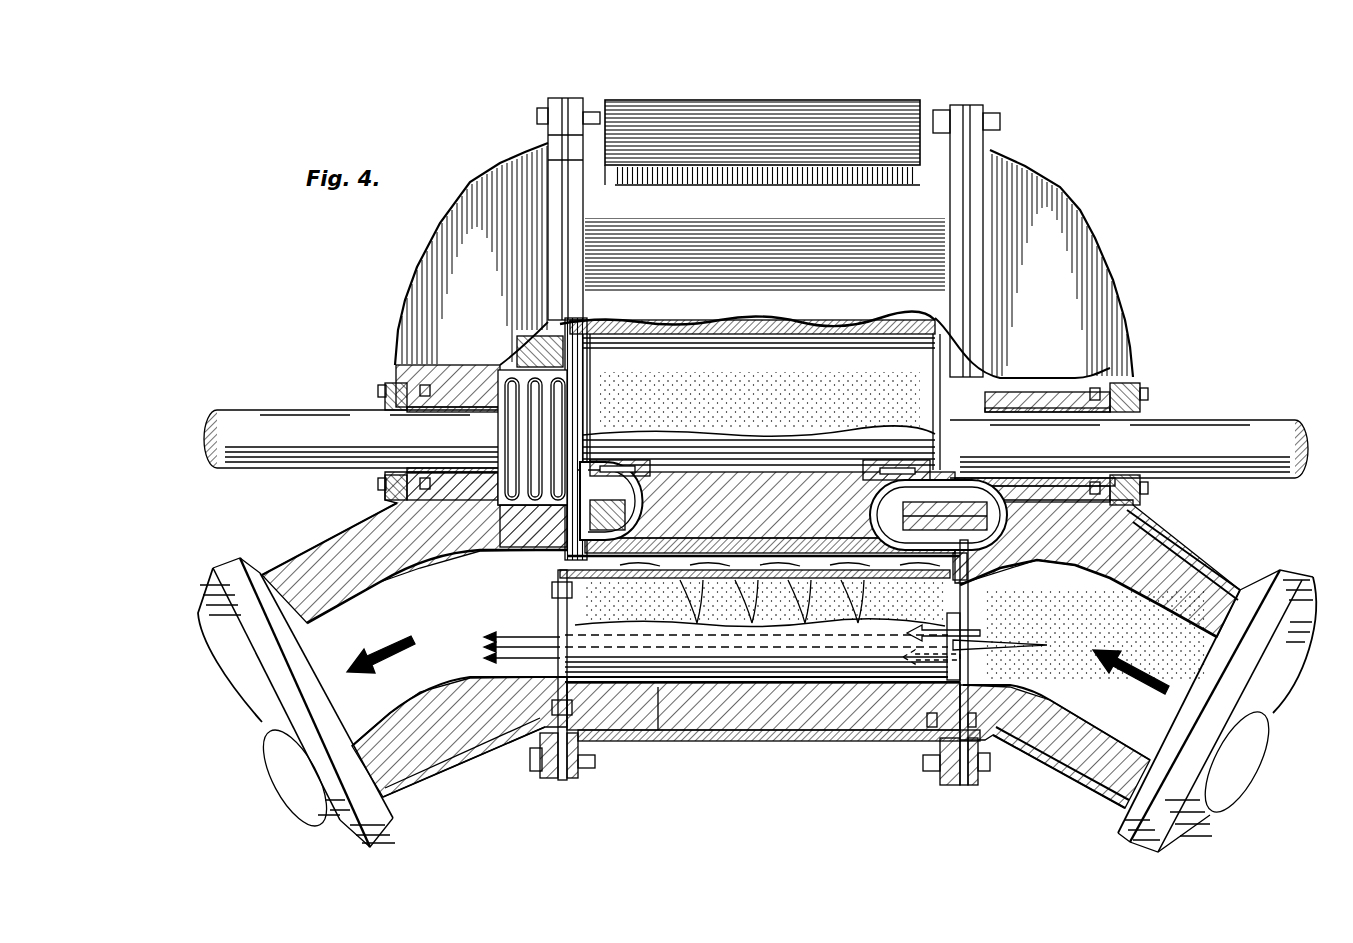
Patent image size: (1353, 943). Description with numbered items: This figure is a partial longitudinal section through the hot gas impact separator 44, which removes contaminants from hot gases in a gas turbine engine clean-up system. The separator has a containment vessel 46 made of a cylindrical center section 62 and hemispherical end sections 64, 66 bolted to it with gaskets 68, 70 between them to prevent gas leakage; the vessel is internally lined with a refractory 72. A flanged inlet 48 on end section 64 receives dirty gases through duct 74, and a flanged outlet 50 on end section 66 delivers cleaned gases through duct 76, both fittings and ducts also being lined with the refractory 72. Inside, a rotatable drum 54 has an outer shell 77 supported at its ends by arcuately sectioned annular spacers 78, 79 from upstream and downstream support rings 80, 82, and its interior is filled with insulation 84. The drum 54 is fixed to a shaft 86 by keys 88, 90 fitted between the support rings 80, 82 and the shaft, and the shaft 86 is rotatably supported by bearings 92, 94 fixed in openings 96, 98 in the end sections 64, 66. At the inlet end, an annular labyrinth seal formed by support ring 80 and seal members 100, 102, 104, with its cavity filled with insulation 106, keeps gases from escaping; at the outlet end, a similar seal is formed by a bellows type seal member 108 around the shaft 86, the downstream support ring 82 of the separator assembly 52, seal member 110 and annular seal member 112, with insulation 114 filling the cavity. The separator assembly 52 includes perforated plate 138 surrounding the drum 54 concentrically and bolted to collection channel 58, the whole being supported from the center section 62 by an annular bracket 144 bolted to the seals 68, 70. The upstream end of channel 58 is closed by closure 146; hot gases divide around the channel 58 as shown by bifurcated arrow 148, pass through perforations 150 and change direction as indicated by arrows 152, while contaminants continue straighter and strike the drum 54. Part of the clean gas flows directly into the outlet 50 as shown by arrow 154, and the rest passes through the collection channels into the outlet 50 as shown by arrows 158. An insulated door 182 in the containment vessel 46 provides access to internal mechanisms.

The hot gas impact separator 44 is at (476, 136).
The containment vessel 46 is at (744, 260).
The inlet 48 is at (1150, 530).
The outlet 50 is at (342, 527).
The separator assembly 52 is at (562, 323).
The rotatable drum 54 is at (750, 377).
The collection channel 58 is at (760, 622).
The cylindrical center section 62 is at (773, 744).
The hemispherical end section 64 is at (1100, 238).
The hemispherical end section 66 is at (398, 300).
The gasket 68 is at (984, 116).
The gasket 70 is at (548, 108).
The refractory 72 is at (795, 745).
The duct 74 is at (1290, 666).
The duct 76 is at (213, 600).
The outer shell 77 is at (720, 322).
The annular spacer 78 is at (895, 527).
The annular spacer 79 is at (644, 473).
The upstream support ring 80 is at (942, 466).
The downstream support ring 82 is at (597, 470).
The insulation 84 is at (770, 515).
The shaft 86 is at (354, 420).
The key 88 is at (890, 458).
The key 90 is at (620, 460).
The bearing 92 is at (1143, 401).
The bearing 94 is at (393, 383).
The opening 96 is at (1137, 478).
The opening 98 is at (392, 468).
The seal member 100 is at (1085, 478).
The seal member 102 is at (985, 578).
The seal member 104 is at (905, 508).
The insulation 106 is at (938, 479).
The bellows type seal member 108 is at (510, 365).
The seal member 110 is at (567, 528).
The annular seal member 112 is at (630, 512).
The insulation 114 is at (568, 510).
The perforated plate 138 is at (850, 590).
The annular bracket 144 is at (658, 690).
The closure 146 is at (968, 622).
The bifurcated arrow 148 is at (990, 655).
The perforations 150 is at (782, 588).
The arrows 152 is at (697, 585).
The arrow 154 is at (553, 558).
The arrows 158 is at (528, 648).
The insulated door 182 is at (705, 141).